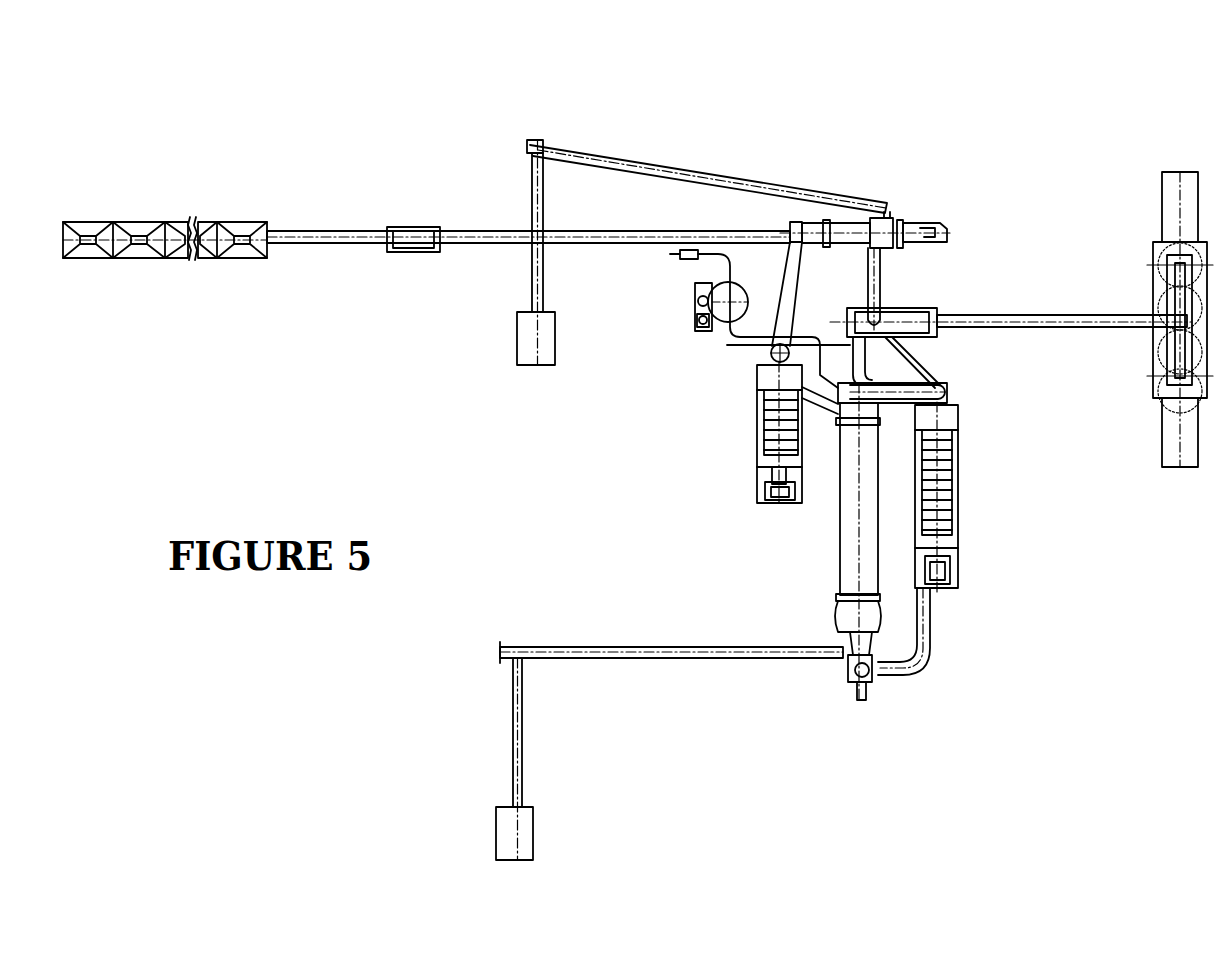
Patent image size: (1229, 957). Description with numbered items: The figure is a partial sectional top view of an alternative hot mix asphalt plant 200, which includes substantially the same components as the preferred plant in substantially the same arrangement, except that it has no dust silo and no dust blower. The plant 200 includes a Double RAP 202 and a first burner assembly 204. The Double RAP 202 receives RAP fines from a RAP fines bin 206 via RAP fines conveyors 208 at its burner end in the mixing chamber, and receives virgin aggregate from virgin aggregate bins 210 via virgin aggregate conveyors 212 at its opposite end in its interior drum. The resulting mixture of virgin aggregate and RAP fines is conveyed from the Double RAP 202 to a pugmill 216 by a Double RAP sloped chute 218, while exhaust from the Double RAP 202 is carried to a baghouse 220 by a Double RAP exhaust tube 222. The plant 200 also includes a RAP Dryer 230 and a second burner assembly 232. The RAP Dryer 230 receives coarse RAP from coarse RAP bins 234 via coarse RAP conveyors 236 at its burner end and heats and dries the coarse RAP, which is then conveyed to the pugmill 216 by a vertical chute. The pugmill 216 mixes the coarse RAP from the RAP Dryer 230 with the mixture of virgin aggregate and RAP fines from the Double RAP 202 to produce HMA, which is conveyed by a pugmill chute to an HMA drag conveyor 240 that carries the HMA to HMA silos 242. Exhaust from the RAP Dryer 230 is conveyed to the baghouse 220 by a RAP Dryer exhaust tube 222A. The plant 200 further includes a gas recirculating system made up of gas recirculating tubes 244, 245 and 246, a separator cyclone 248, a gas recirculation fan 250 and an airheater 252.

The alternative hot mix asphalt plant 200 is at (1034, 140).
The Double RAP 202 is at (851, 245).
The first burner assembly 204 is at (957, 233).
The RAP fines bin 206 is at (520, 366).
The RAP fines conveyors 208 is at (578, 150).
The virgin aggregate bins 210 is at (141, 261).
The virgin aggregate conveyors 212 is at (331, 248).
The pugmill 216 is at (935, 300).
The Double RAP sloped chute 218 is at (881, 276).
The baghouse 220 is at (757, 453).
The Double RAP exhaust tube 222 is at (792, 270).
The RAP Dryer exhaust tube 222A is at (775, 372).
The RAP Dryer 230 is at (838, 530).
The second burner assembly 232 is at (861, 702).
The coarse RAP bins 234 is at (535, 833).
The coarse RAP conveyors 236 is at (559, 660).
The HMA drag conveyor 240 is at (1058, 330).
The HMA silos 242 is at (1150, 396).
The gas recirculating tube 244 is at (960, 423).
The gas recirculating tube 245 is at (700, 338).
The gas recirculating tube 246 is at (940, 663).
The separator cyclone 248 is at (950, 392).
The gas recirculation fan 250 is at (668, 258).
The airheater 252 is at (880, 683).